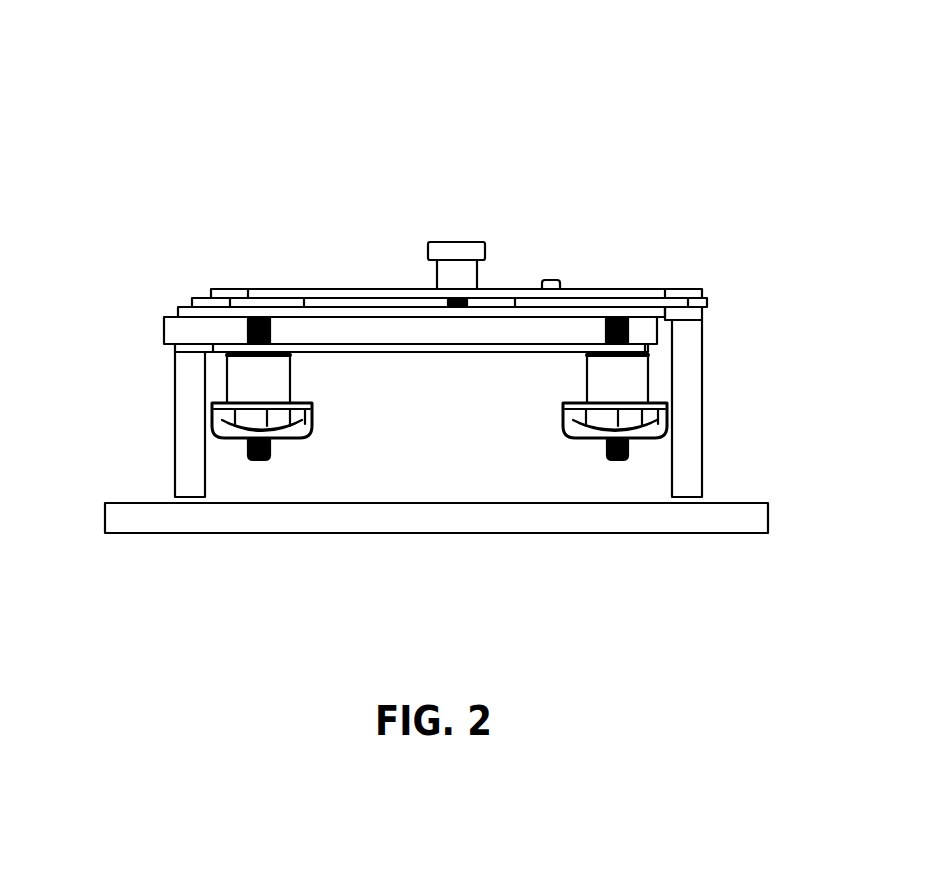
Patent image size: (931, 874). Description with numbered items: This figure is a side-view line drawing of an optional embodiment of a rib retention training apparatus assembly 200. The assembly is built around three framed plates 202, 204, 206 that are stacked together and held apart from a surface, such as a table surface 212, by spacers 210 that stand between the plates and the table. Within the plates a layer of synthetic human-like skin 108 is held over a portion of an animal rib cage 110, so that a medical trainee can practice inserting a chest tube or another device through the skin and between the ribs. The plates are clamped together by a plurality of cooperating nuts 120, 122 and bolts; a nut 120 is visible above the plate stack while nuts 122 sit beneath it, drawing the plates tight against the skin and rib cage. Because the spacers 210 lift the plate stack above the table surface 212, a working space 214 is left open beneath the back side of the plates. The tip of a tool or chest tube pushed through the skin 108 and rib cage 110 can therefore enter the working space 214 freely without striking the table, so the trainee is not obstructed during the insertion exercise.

The rib retention training apparatus assembly 200 is at (467, 42).
The synthetic human-like skin 108 is at (203, 297).
The animal rib cage 110 is at (163, 330).
The nut 120 is at (450, 243).
The nut 122 is at (283, 437).
The framed plate 202 is at (583, 287).
The framed plate 204 is at (705, 312).
The framed plate 206 is at (365, 352).
The spacer 210 is at (175, 480).
The table surface 212 is at (290, 533).
The working space 214 is at (527, 477).